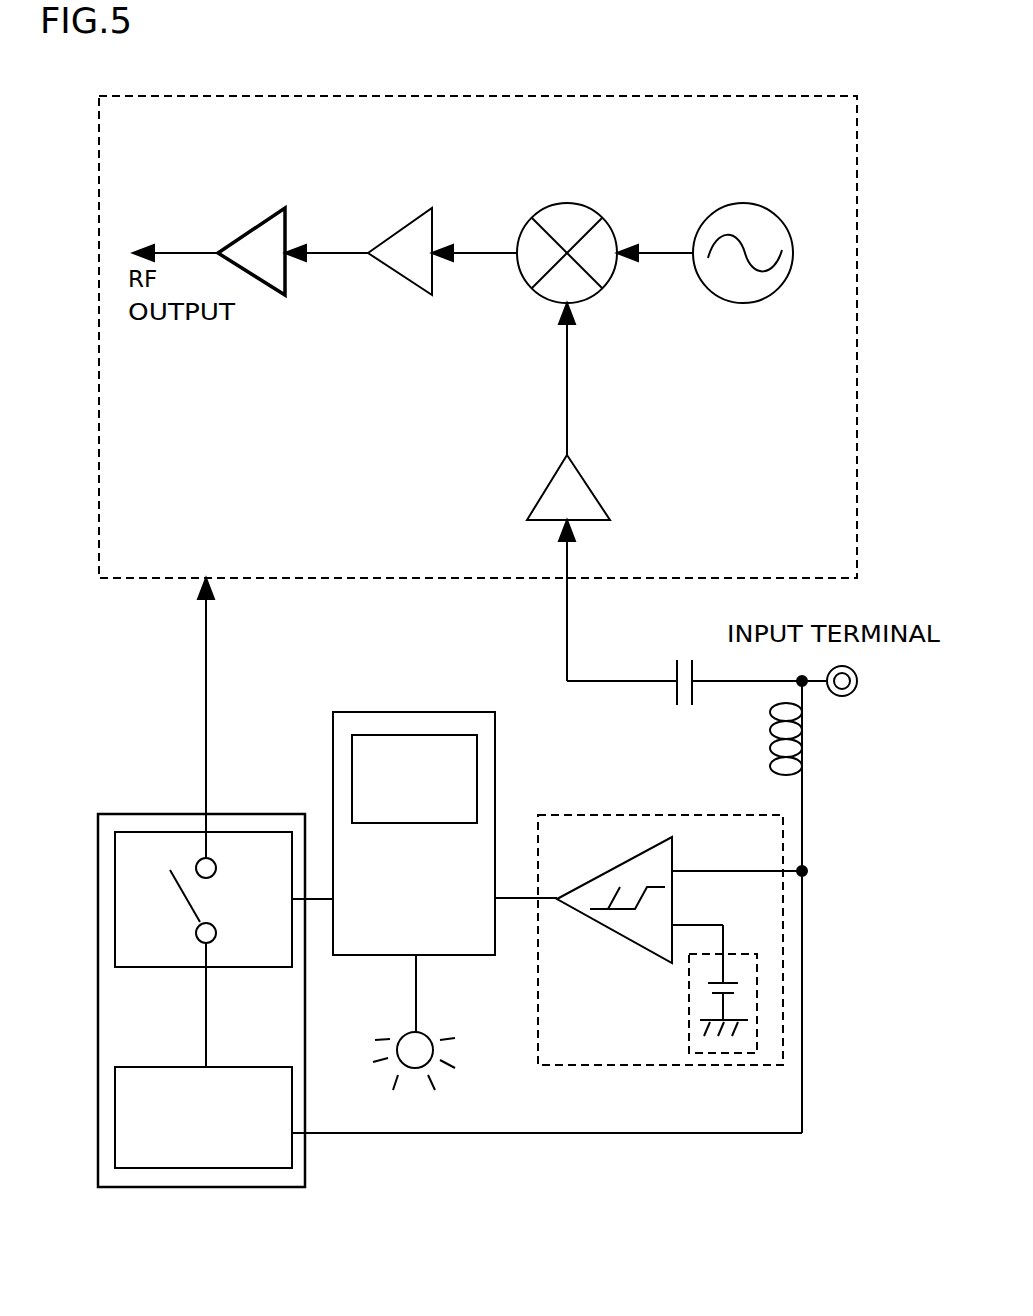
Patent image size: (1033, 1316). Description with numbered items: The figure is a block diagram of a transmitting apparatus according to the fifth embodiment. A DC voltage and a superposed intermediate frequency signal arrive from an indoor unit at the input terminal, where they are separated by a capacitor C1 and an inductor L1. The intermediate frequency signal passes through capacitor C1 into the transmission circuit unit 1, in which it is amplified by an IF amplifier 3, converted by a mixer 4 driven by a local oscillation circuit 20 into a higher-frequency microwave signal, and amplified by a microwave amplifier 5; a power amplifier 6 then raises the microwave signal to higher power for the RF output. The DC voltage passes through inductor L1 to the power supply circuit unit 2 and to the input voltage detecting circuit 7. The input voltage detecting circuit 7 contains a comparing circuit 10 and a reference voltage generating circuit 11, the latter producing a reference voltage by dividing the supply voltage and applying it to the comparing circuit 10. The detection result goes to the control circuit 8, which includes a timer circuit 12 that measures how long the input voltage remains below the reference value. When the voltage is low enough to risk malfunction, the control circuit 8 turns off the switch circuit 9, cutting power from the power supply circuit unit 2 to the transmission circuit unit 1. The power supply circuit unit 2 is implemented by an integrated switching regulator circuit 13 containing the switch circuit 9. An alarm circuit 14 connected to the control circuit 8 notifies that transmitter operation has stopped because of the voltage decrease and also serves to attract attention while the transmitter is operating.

The transmission circuit unit 1 is at (284, 579).
The power supply circuit unit 2 is at (306, 1072).
The IF amplifier 3 is at (598, 490).
The mixer 4 is at (604, 287).
The microwave amplifier 5 is at (434, 290).
The power amplifier 6 is at (287, 290).
The input voltage detecting circuit 7 is at (572, 815).
The control circuit 8 is at (463, 712).
The switch circuit 9 is at (294, 969).
The comparing circuit 10 is at (601, 926).
The reference voltage generating circuit 11 is at (689, 1000).
The timer circuit 12 is at (410, 735).
The switching regulator circuit 13 is at (294, 1160).
The alarm circuit 14 is at (425, 1035).
The local oscillation circuit 20 is at (780, 287).
The capacitor C1 is at (676, 668).
The inductor L1 is at (806, 737).